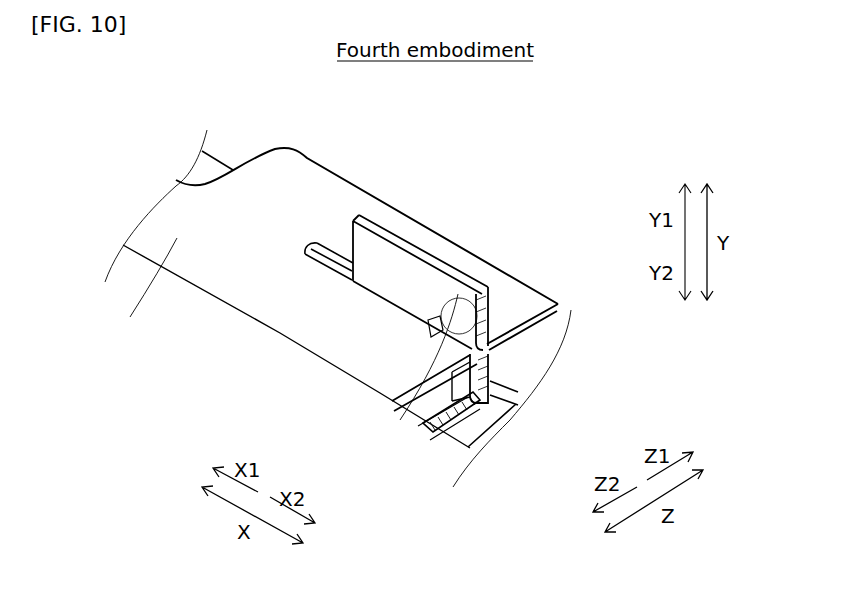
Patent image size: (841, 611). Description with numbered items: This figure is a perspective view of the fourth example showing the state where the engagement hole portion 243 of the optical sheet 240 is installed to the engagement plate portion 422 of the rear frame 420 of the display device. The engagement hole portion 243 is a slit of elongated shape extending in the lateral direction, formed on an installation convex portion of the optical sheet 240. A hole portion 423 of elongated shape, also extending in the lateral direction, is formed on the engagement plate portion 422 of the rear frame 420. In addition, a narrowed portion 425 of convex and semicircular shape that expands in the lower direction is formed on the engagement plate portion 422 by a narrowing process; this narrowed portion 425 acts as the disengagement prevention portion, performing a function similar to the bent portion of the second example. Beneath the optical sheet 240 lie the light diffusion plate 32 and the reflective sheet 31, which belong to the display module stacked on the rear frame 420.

The rear frame 420 is at (200, 177).
The optical sheet 240 is at (293, 343).
The engagement hole portion 243 is at (316, 243).
The narrowed portion 425 is at (458, 294).
The engagement plate portion 422 is at (490, 320).
The hole portion 423 is at (423, 398).
The light diffusion plate 32 is at (440, 415).
The reflective sheet 31 is at (468, 428).